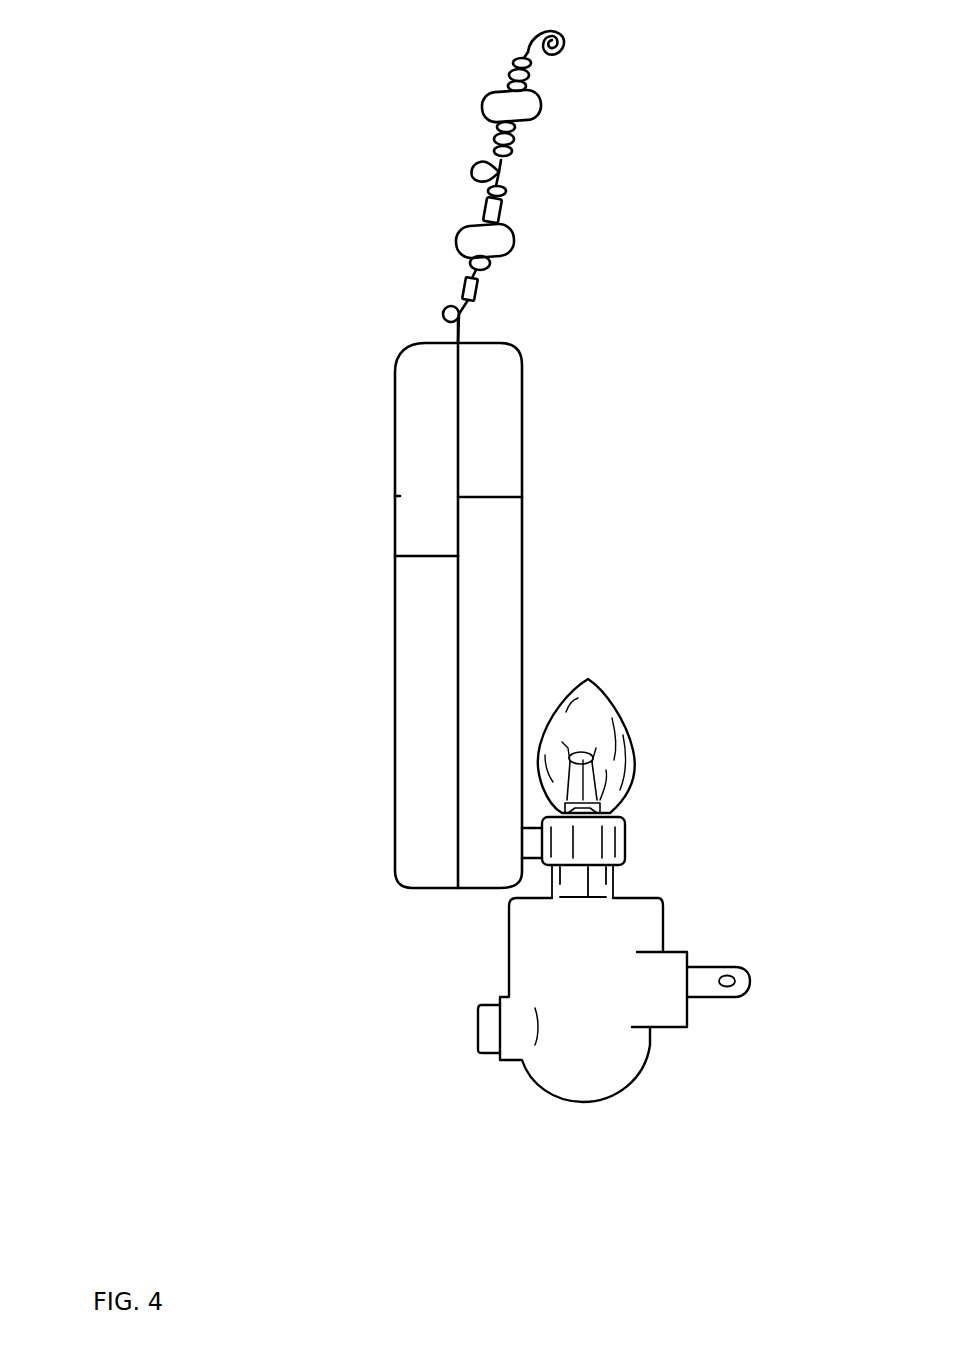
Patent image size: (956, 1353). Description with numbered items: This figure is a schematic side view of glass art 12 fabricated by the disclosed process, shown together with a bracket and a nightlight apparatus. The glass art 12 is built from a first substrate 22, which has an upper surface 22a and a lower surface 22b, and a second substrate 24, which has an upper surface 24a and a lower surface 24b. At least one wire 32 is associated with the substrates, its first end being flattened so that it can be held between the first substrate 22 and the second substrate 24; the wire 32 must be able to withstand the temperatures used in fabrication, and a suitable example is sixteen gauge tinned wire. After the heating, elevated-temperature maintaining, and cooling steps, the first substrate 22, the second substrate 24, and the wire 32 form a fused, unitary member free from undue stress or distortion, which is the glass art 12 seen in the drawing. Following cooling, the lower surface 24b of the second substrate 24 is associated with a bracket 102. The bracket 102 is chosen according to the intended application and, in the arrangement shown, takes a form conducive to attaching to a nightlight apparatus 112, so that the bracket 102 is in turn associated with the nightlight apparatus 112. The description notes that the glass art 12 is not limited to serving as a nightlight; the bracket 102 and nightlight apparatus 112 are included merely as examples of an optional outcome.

The glass art 12 is at (388, 1120).
The first substrate 22 is at (410, 417).
The upper surface of first substrate 22a is at (395, 494).
The lower surface of first substrate 22b is at (395, 556).
The second substrate 24 is at (503, 430).
The upper surface of second substrate 24a is at (522, 497).
The lower surface of second substrate 24b is at (522, 557).
The wire 32 is at (503, 168).
The bracket 102 is at (522, 718).
The nightlight apparatus 112 is at (672, 803).